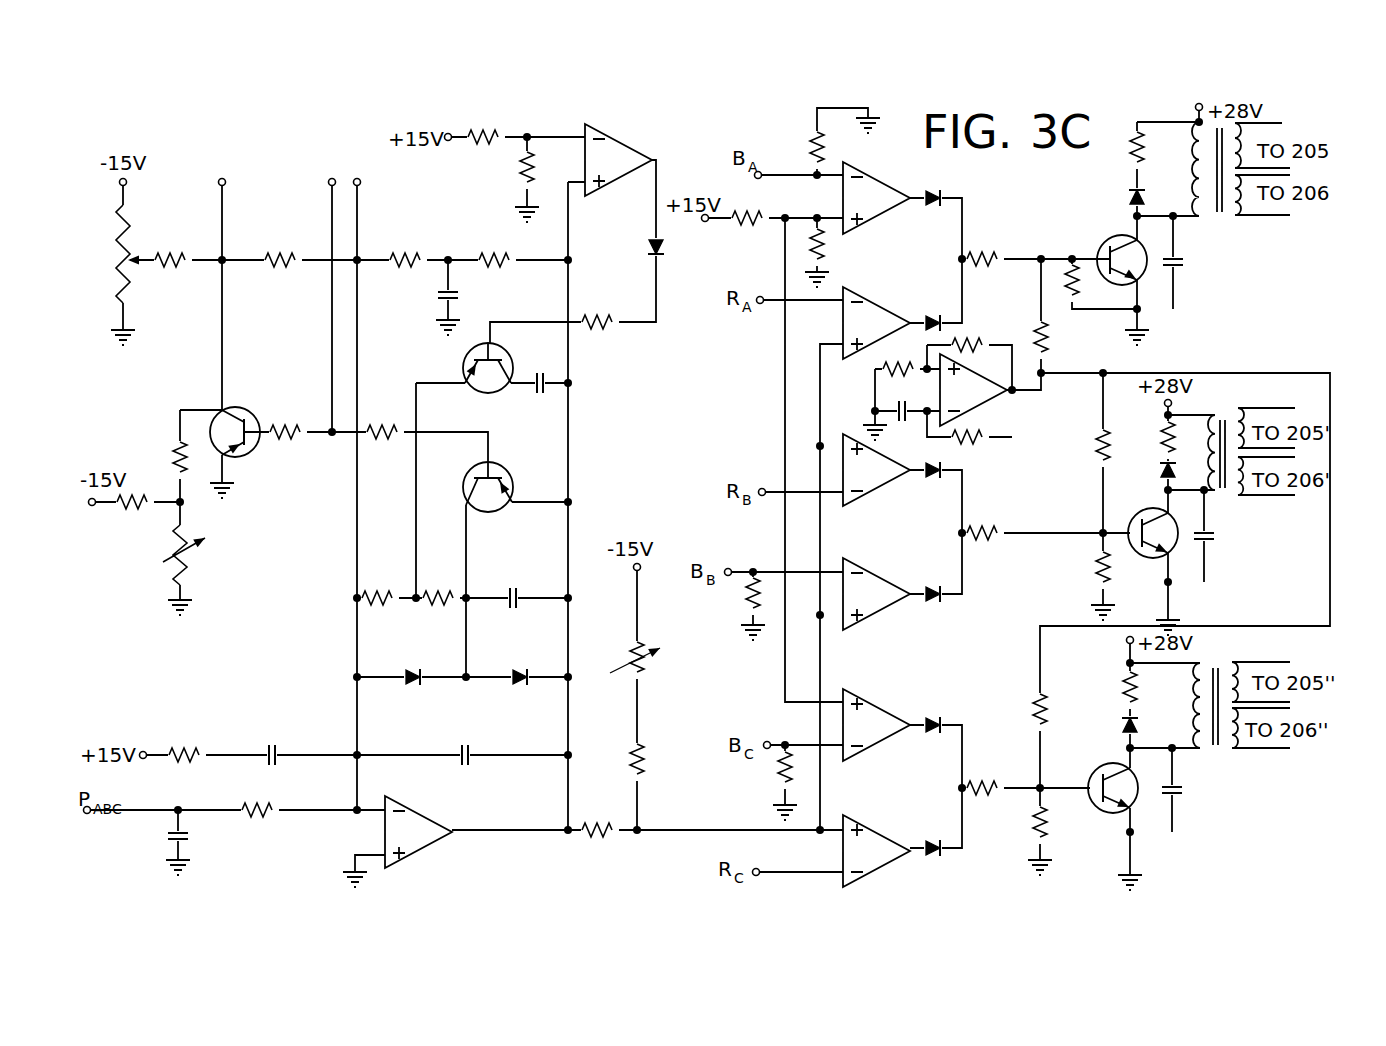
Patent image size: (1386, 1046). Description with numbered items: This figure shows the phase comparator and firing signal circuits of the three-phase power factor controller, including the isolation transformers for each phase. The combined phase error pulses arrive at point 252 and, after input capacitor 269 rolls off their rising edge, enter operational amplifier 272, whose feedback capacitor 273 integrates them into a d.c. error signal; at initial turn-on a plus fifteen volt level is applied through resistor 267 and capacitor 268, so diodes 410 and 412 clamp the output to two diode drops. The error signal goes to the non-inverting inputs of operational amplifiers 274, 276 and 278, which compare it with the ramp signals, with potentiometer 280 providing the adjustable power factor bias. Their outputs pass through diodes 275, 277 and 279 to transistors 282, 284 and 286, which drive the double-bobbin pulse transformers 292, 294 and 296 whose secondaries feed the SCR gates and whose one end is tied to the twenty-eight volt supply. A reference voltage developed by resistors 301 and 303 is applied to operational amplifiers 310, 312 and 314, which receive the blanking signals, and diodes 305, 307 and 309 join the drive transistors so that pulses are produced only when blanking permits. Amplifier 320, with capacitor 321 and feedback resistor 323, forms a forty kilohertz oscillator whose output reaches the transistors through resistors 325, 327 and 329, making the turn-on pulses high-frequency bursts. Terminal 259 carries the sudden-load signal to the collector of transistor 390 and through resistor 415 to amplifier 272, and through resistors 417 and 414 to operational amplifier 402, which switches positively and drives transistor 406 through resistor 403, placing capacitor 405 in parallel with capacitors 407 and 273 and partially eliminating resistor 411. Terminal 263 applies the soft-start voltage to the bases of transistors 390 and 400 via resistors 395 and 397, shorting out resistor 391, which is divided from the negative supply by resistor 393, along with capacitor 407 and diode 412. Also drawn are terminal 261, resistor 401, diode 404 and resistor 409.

The point 252 is at (92, 818).
The terminal 259 is at (222, 178).
The input terminal 261 is at (362, 180).
The terminal 263 is at (332, 178).
The resistor 267 is at (189, 744).
The capacitor 268 is at (277, 740).
The input capacitor 269 is at (195, 847).
The operational amplifier 272 is at (422, 858).
The feedback capacitor 273 is at (462, 765).
The operational amplifier 274 is at (872, 297).
The diode 275 is at (938, 302).
The operational amplifier 276 is at (852, 508).
The diode 277 is at (937, 474).
The operational amplifier 278 is at (856, 821).
The diode 279 is at (936, 854).
The potentiometer 280 is at (640, 648).
The transistor 282 is at (1104, 240).
The transistor 284 is at (1162, 557).
The transistor 286 is at (1108, 817).
The double-bobbin pulse transformer 292 is at (1223, 228).
The double-bobbin pulse transformer 294 is at (1234, 408).
The double-bobbin pulse transformer 296 is at (1218, 756).
The resistor 301 is at (743, 228).
The resistor 303 is at (825, 246).
The diode 305 is at (937, 194).
The diode 307 is at (936, 605).
The diode 309 is at (924, 719).
The operational amplifier 310 is at (864, 174).
The operational amplifier 312 is at (862, 564).
The operational amplifier 314 is at (862, 701).
The amplifier 320 is at (1000, 408).
The capacitor 321 is at (902, 417).
The feedback resistor 323 is at (980, 440).
The resistor 325 is at (1048, 350).
The resistor 327 is at (1100, 460).
The resistor 329 is at (1030, 735).
The transistor 390 is at (258, 452).
The resistor 391 is at (130, 243).
The resistor 393 is at (143, 520).
The resistor 395 is at (301, 420).
The resistor 397 is at (403, 420).
The transistor 400 is at (487, 466).
The resistor network 401 is at (530, 129).
The operational amplifier 402 is at (610, 140).
The resistor 403 is at (596, 326).
The diode 404 is at (648, 250).
The capacitor 405 is at (538, 393).
The transistor 406 is at (463, 364).
The capacitor 407 is at (514, 610).
The resistor 409 is at (388, 588).
The diode 410 is at (408, 686).
The resistor 411 is at (438, 612).
The diode 412 is at (520, 686).
The resistor 414 is at (498, 250).
The resistor 415 is at (286, 250).
The resistor 417 is at (415, 250).